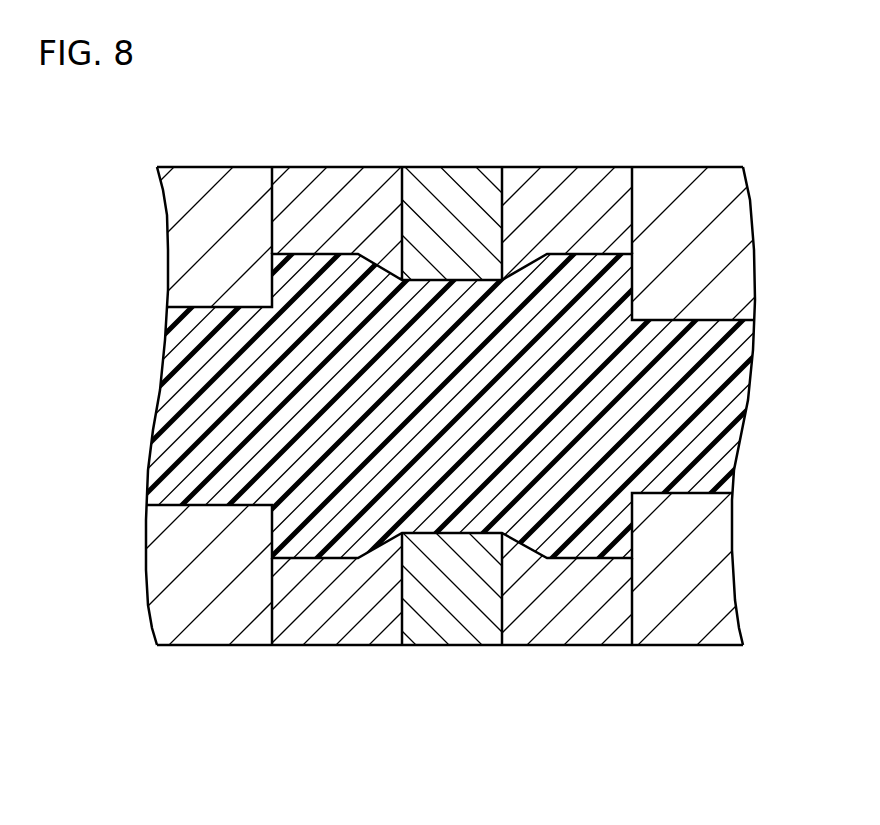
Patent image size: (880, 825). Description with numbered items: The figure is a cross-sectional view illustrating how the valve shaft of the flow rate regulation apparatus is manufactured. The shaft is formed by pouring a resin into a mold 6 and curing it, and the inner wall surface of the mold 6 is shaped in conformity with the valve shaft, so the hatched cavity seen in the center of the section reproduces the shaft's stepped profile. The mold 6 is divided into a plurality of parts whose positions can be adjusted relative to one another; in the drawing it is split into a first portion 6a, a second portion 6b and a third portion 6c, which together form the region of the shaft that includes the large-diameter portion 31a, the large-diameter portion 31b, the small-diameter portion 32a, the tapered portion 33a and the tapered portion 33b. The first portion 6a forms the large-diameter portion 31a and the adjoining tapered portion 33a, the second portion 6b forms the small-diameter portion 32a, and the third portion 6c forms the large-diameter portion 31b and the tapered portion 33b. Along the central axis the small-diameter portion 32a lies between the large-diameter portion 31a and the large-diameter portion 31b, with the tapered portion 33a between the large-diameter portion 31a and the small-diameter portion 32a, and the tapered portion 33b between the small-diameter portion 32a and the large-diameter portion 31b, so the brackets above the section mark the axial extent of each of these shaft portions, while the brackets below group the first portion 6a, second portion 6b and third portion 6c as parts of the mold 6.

The mold 6 is at (440, 412).
The first portion 6a is at (326, 606).
The second portion 6b is at (450, 606).
The third portion 6c is at (310, 720).
The large-diameter portion 31a is at (272, 153).
The large-diameter portion 31b is at (549, 153).
The small-diameter portion 32a is at (404, 153).
The tapered portion 33a is at (355, 153).
The tapered portion 33b is at (547, 153).